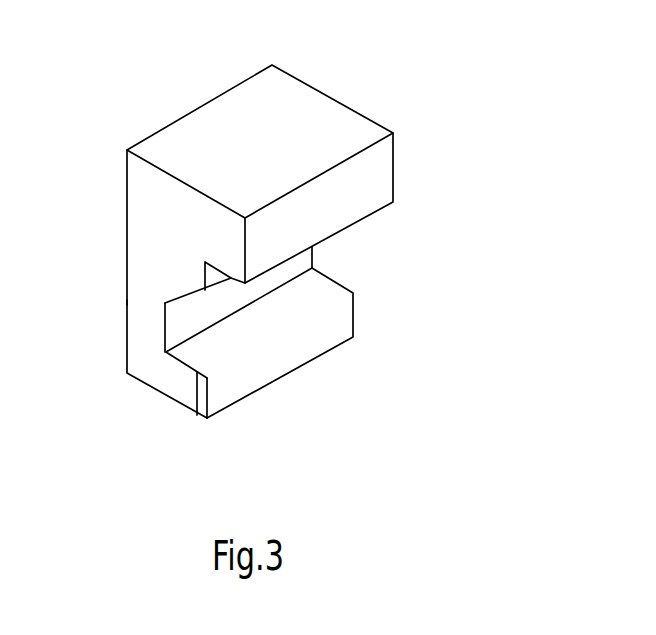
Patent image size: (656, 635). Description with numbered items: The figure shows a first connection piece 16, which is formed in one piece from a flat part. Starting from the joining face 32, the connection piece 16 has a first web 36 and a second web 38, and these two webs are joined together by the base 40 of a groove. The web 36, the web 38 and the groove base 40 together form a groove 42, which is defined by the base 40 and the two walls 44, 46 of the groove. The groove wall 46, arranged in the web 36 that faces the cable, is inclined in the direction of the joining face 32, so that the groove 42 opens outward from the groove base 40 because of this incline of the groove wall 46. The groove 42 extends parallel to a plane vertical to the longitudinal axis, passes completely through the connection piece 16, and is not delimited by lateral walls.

The connection piece 16 is at (97, 174).
The joining face 32 is at (303, 112).
The first web 36 is at (173, 207).
The second web 38 is at (173, 382).
The groove base 40 is at (175, 322).
The groove 42 is at (350, 258).
The groove wall 44 is at (192, 380).
The groove wall 46 is at (178, 298).